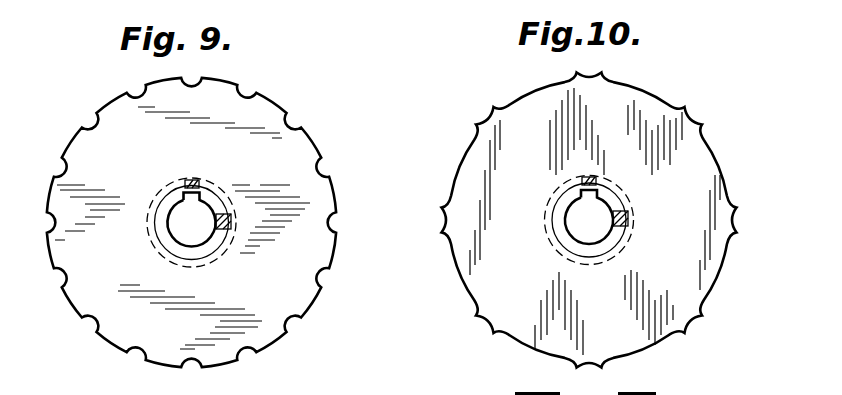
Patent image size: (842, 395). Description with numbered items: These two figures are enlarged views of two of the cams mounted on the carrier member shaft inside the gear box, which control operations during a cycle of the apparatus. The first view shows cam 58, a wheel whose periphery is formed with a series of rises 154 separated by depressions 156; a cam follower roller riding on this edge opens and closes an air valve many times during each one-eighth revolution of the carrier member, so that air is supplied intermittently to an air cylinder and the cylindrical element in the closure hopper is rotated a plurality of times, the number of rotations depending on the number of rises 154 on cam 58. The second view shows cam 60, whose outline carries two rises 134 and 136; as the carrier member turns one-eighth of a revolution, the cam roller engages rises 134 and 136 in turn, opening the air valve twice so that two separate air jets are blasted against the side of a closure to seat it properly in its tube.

In FIG. 9, the cam 58 is at (217, 222).
In FIG. 10, the cam 60 is at (605, 215).
In FIG. 9, the rises 154 is at (217, 222).
In FIG. 9, the depressions 156 is at (318, 168).
In FIG. 10, the rise 134 is at (605, 215).
In FIG. 10, the rise 136 is at (700, 125).